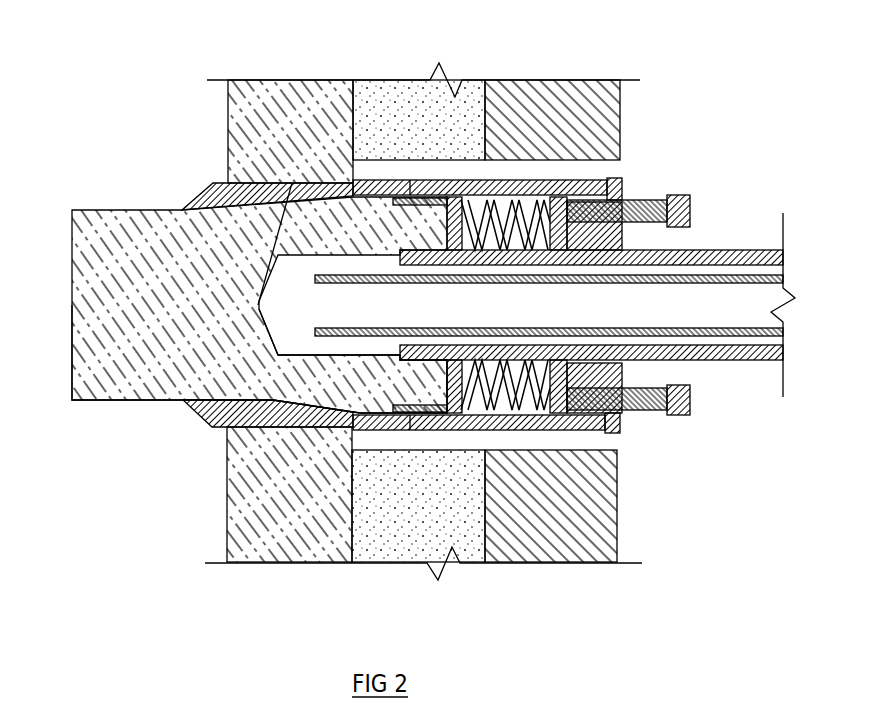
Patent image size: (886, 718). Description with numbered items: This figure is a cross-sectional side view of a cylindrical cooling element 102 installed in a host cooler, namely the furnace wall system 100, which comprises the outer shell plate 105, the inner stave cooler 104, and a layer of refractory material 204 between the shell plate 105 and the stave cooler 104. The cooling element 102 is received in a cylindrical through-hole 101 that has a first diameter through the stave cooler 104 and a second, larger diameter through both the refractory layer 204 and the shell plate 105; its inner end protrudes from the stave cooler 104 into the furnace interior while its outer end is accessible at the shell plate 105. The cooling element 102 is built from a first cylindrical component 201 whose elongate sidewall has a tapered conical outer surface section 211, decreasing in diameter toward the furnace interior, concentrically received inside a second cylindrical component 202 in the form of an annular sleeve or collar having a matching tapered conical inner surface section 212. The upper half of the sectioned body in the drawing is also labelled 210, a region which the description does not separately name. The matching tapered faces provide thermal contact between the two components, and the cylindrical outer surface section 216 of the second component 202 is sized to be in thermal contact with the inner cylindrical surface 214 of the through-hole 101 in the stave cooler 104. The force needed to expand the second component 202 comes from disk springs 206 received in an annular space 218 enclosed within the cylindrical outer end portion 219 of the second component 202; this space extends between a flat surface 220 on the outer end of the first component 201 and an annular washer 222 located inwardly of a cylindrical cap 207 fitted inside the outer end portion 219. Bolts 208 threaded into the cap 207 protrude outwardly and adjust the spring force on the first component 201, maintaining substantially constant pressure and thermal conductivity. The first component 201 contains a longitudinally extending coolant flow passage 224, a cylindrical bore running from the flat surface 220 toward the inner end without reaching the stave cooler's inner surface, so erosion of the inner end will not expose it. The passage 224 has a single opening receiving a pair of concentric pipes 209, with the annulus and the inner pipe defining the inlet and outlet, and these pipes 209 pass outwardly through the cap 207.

The furnace wall system 100 is at (597, 583).
The cylindrical through-hole 101 is at (368, 167).
The cylindrical cooling element 102 is at (102, 523).
The inner stave cooler 104 is at (287, 545).
The outer shell plate 105 is at (523, 545).
The first cylindrical component 201 is at (143, 358).
The second cylindrical component 202 is at (217, 412).
The layer of refractory material 204 is at (393, 545).
The disk springs 206 is at (523, 415).
The cylindrical cap 207 is at (622, 239).
The bolts 208 is at (685, 403).
The concentric pipes 209 is at (735, 258).
The nozzle body upper portion 210 is at (123, 237).
The tapered conical outer surface section 211 is at (275, 207).
The tapered conical inner surface section 212 is at (247, 207).
The inner cylindrical surface 214 is at (277, 403).
The cylindrical outer surface section 216 is at (250, 280).
The annular space 218 is at (550, 197).
The cylindrical outer end portion 219 is at (521, 198).
The flat surface 220 is at (456, 200).
The annular washer 222 is at (622, 199).
The coolant flow passage 224 is at (285, 316).